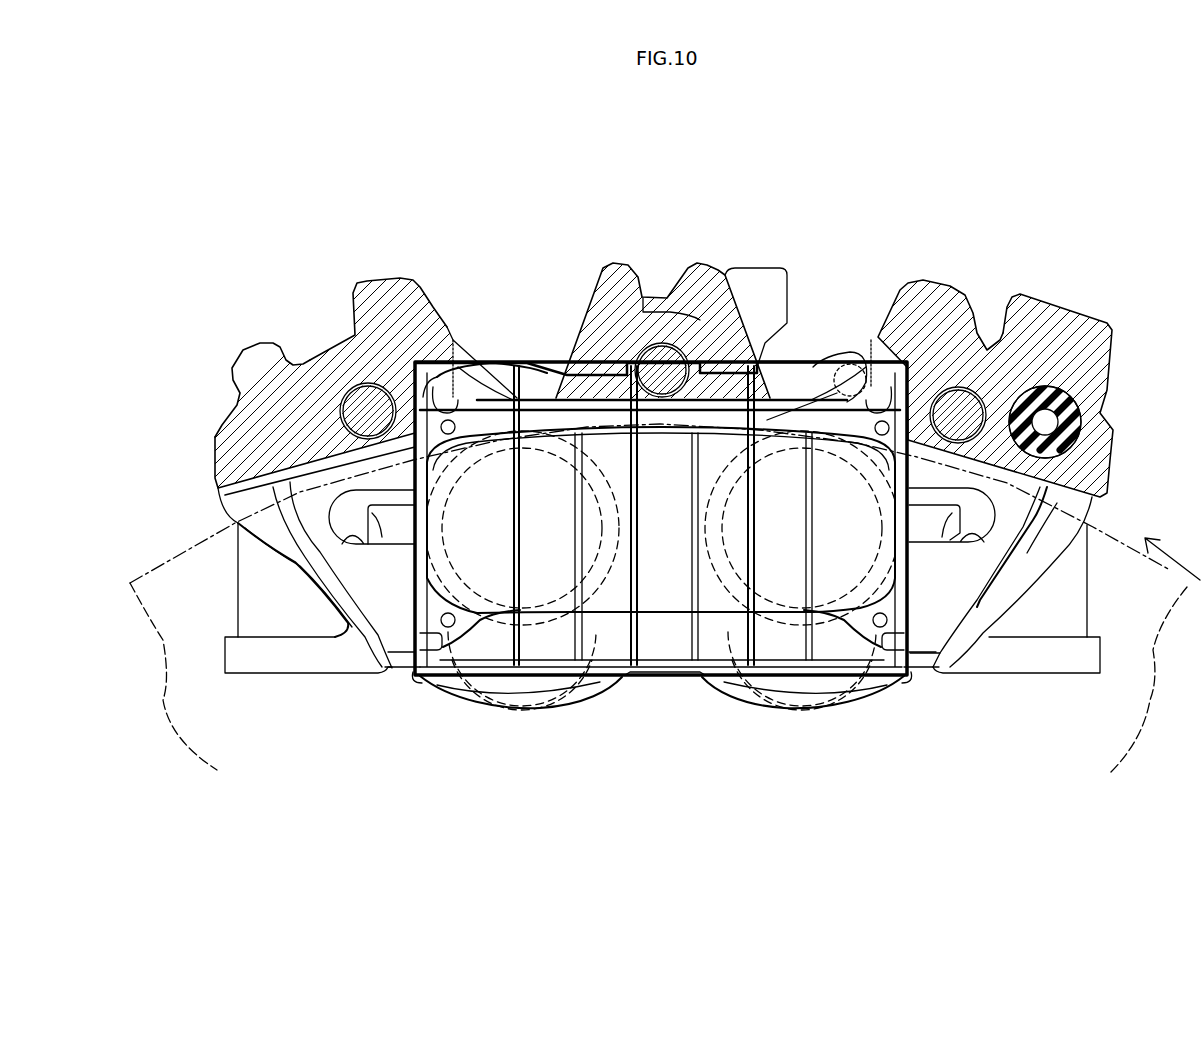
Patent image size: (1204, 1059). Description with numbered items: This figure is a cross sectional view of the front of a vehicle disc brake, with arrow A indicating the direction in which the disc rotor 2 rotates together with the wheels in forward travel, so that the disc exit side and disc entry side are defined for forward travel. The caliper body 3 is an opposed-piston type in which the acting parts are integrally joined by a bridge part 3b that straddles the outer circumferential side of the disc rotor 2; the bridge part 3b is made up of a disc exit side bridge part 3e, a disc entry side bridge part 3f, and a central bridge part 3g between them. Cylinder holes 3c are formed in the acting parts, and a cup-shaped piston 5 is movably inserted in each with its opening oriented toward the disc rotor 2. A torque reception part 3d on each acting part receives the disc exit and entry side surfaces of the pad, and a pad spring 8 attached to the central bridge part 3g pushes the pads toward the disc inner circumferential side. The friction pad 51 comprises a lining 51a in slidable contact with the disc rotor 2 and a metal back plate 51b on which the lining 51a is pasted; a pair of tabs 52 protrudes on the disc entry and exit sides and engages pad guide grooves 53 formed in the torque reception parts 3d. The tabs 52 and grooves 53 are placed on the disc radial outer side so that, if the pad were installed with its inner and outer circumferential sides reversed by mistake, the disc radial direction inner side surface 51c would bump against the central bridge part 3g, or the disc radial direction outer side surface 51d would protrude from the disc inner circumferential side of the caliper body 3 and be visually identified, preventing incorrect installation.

The disc rotor 2 is at (190, 550).
The caliper body 3 is at (1050, 290).
The bridge part 3b is at (385, 268).
The cylinder hole 3c is at (547, 673).
The torque reception part 3d is at (427, 684).
The disc exit side bridge part 3e is at (327, 355).
The disc entry side bridge part 3f is at (940, 290).
The central bridge part 3g is at (613, 265).
The piston 5 is at (487, 653).
The pad spring 8 is at (553, 395).
The friction pad 51 is at (707, 733).
The lining 51a is at (653, 655).
The back plate 51b is at (673, 673).
The disc radial direction inner side surface 51c is at (658, 280).
The disc radial direction outer side surface 51d is at (857, 377).
The tab 52 is at (387, 532).
The pad guide groove 53 is at (343, 540).
The arrow A is at (1172, 555).